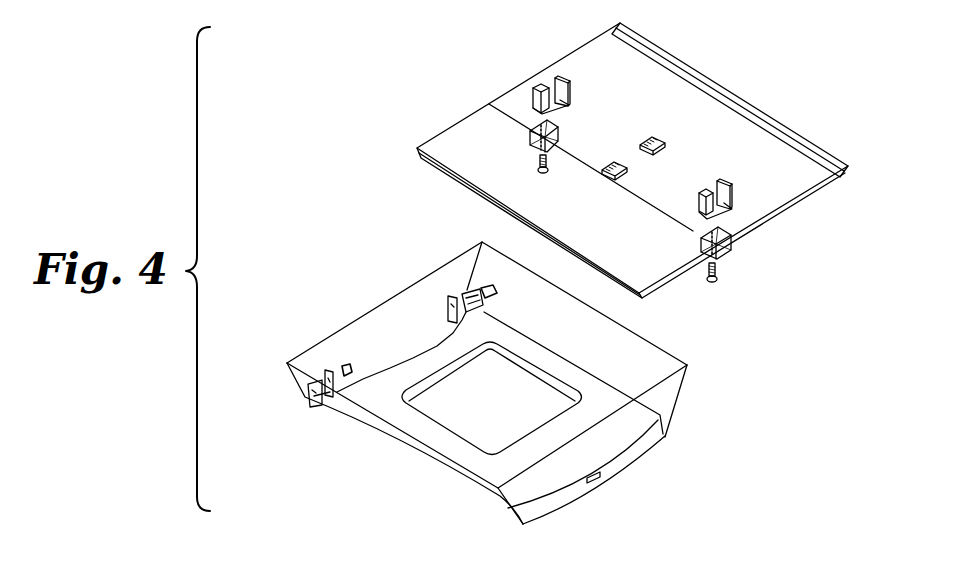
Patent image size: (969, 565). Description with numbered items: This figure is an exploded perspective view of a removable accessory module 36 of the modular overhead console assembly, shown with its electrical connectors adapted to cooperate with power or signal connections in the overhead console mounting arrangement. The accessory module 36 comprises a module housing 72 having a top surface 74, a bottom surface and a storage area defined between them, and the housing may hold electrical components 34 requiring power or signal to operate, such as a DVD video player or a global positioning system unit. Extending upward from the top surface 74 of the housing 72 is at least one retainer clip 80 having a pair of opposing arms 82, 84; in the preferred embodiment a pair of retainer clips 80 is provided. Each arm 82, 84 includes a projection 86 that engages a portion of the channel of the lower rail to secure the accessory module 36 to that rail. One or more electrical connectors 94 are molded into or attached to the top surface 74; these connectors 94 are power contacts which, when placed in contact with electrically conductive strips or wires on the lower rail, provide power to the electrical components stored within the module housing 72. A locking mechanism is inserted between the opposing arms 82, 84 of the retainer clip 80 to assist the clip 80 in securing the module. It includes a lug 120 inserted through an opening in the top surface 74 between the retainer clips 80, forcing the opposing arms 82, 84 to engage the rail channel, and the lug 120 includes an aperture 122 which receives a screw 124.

The electrical components 34 is at (458, 418).
The accessory module 36 is at (754, 322).
The module housing 72 is at (287, 366).
The top surface 74 is at (790, 163).
The retainer clip 80 is at (697, 226).
The opposing arm 82 is at (534, 91).
The opposing arm 84 is at (564, 78).
The projection 86 is at (726, 185).
The electrical connectors 94 is at (617, 160).
The lug 120 is at (531, 138).
The aperture 122 is at (541, 128).
The screw 124 is at (538, 169).